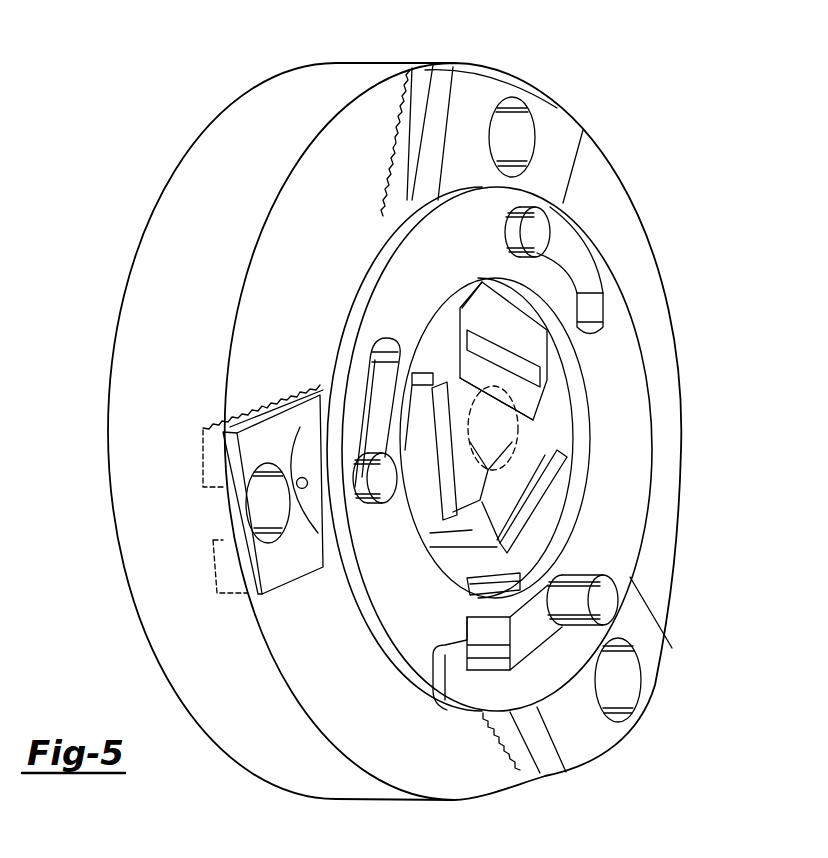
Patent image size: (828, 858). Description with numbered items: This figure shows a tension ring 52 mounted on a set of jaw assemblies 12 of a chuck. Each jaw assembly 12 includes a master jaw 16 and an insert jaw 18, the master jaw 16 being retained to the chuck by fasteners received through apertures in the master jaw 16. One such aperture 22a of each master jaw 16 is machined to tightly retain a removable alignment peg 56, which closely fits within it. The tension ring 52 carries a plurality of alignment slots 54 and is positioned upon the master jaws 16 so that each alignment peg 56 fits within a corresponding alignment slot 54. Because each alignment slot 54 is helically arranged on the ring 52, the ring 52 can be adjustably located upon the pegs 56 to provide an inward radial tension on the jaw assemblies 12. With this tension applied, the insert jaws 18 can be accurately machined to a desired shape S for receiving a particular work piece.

The jaw assembly 12 is at (566, 95).
The master jaw 16 is at (473, 88).
The insert jaw 18 is at (461, 382).
The aperture 22a is at (548, 207).
The tension ring 52 is at (642, 363).
The alignment slot 54 is at (385, 336).
The alignment peg 56 is at (538, 233).
The desired shape S is at (527, 456).